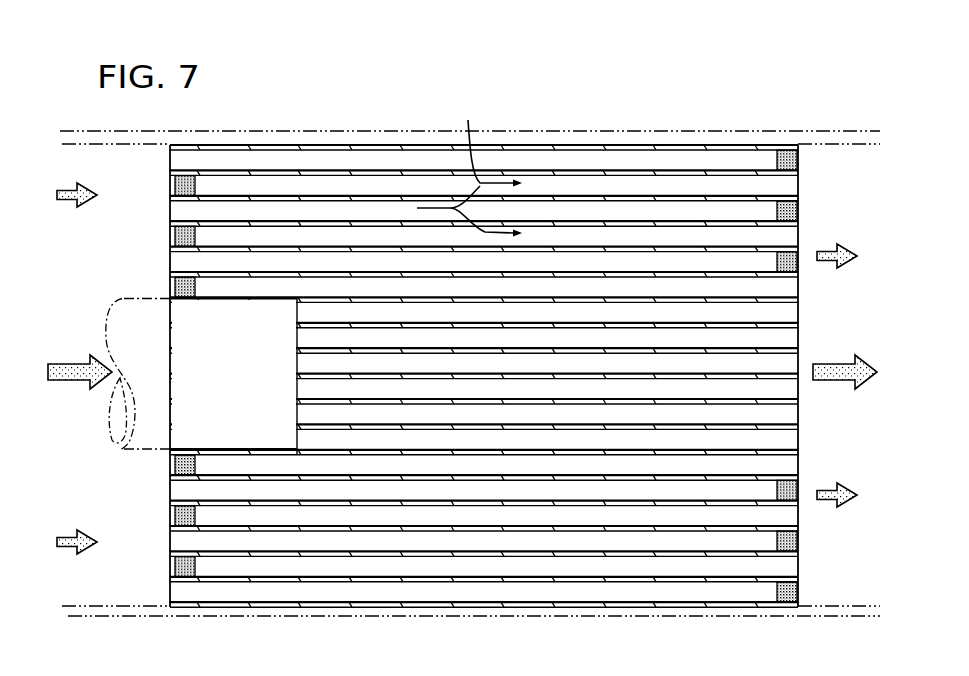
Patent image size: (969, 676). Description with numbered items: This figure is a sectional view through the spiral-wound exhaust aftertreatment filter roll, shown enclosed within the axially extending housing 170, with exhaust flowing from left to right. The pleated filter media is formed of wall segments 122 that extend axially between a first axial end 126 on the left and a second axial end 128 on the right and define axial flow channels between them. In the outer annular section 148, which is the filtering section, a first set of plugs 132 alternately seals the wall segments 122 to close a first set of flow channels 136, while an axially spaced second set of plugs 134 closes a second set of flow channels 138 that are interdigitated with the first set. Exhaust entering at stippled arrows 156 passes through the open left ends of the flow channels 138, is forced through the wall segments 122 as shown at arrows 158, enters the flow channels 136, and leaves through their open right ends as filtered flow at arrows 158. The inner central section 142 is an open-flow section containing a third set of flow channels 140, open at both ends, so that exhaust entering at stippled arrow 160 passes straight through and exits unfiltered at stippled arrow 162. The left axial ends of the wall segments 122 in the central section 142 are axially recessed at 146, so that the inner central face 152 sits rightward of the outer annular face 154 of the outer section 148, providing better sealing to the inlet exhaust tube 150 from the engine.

The wall segments 122 is at (383, 168).
The first axial end 126 is at (168, 167).
The second axial end 128 is at (798, 172).
The first set of plugs 132 is at (168, 228).
The second set of plugs 134 is at (797, 258).
The first set of flow channels 136 is at (252, 233).
The second set of flow channels 138 is at (318, 210).
The third set of flow channels 140 is at (783, 365).
The inner central section 142 is at (290, 323).
The axial recess 146 is at (297, 372).
The outer annular section 148 is at (168, 256).
The exhaust tube 150 is at (150, 449).
The inner central face 152 is at (291, 413).
The outer annular face 154 is at (162, 527).
The exhaust flow arrows 156 is at (68, 207).
The filtered exhaust flow arrows 158 is at (830, 530).
The incoming central exhaust flow arrow 160 is at (68, 389).
The central outlet flow arrow 162 is at (840, 383).
The housing 170 is at (512, 130).